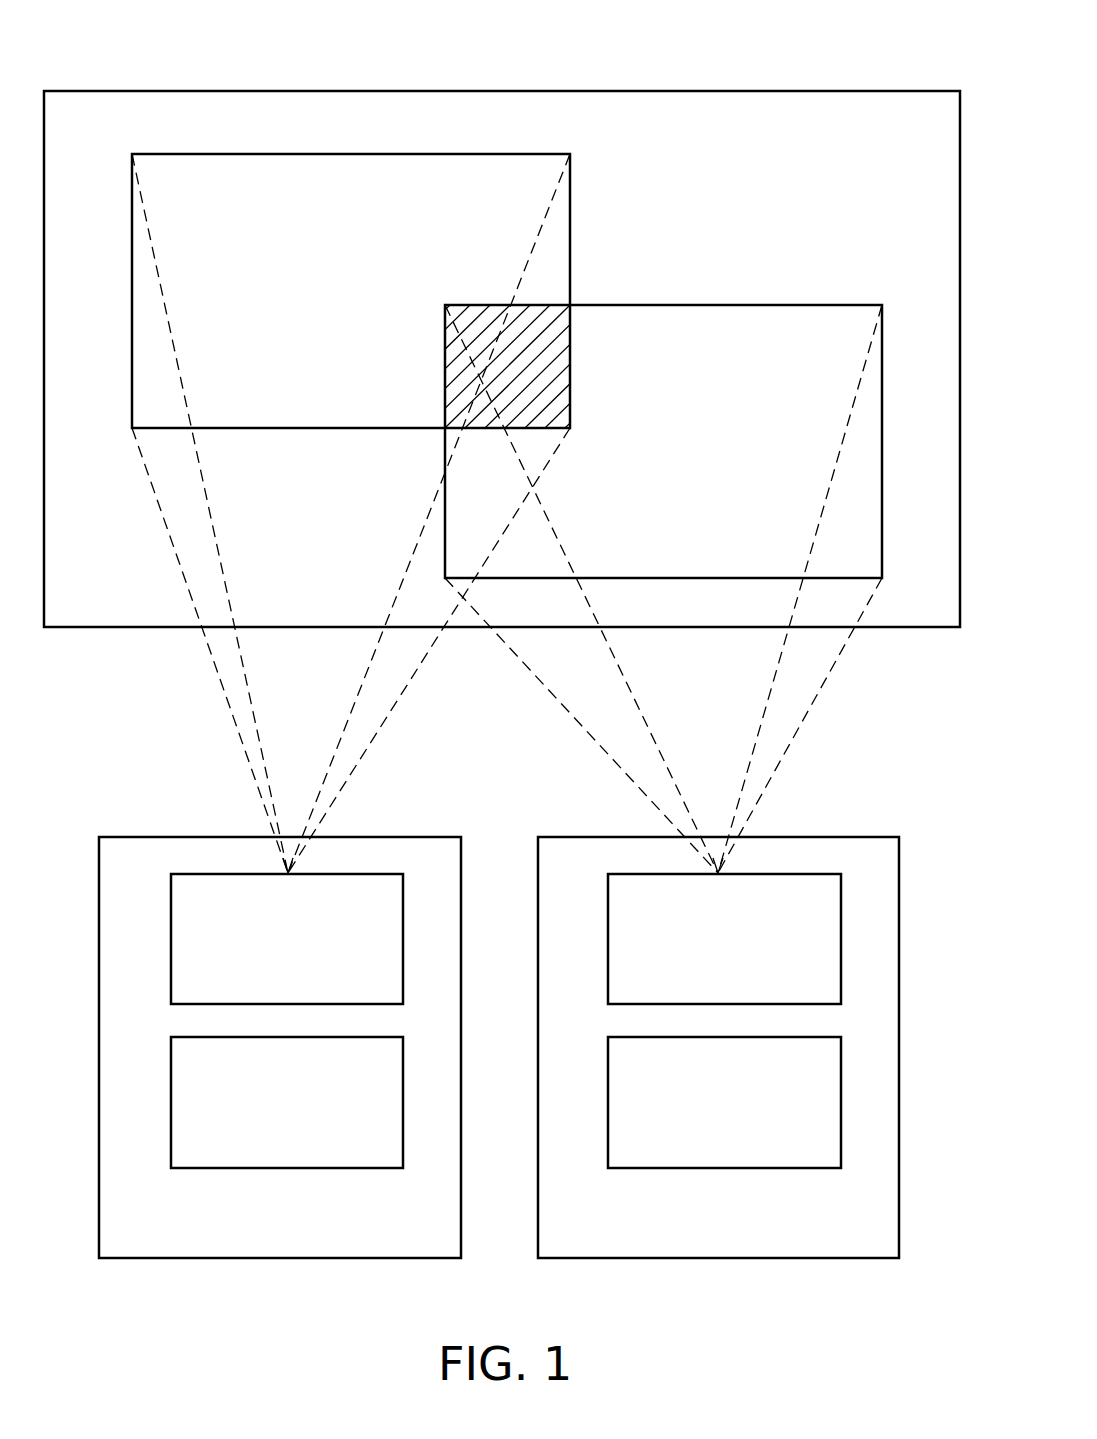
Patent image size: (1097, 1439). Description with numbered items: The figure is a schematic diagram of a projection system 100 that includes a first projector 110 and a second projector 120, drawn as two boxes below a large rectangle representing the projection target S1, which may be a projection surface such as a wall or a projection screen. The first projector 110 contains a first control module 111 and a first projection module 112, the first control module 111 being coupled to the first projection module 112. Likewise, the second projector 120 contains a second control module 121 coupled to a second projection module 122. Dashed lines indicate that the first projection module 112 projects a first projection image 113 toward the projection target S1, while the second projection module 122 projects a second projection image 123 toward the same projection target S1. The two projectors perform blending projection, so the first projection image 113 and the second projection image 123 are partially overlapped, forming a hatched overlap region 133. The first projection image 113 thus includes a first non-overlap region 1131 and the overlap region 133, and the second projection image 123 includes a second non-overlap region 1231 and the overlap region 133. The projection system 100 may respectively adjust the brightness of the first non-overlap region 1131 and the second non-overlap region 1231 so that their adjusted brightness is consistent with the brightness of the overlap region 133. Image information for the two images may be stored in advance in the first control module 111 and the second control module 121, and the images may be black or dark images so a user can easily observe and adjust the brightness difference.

The projection system 100 is at (941, 1301).
The first projector 110 is at (433, 837).
The first control module 111 is at (403, 1108).
The first projection module 112 is at (403, 945).
The first projection image 113 is at (268, 154).
The first non-overlap region 1131 is at (395, 178).
The second projector 120 is at (871, 837).
The second control module 121 is at (841, 1108).
The second projection module 122 is at (841, 945).
The second projection image 123 is at (808, 305).
The second non-overlap region 1231 is at (723, 335).
The overlap region 133 is at (547, 350).
The projection target S1 is at (858, 91).